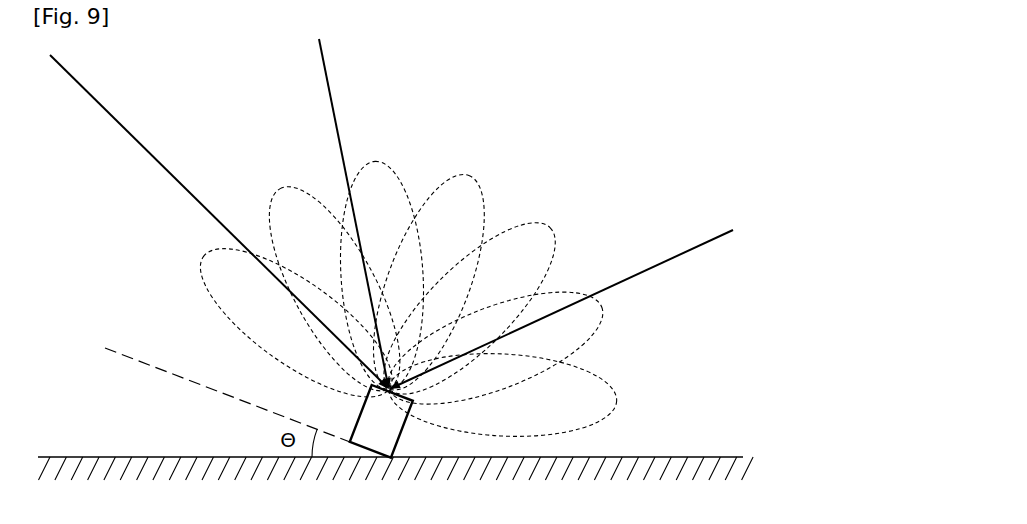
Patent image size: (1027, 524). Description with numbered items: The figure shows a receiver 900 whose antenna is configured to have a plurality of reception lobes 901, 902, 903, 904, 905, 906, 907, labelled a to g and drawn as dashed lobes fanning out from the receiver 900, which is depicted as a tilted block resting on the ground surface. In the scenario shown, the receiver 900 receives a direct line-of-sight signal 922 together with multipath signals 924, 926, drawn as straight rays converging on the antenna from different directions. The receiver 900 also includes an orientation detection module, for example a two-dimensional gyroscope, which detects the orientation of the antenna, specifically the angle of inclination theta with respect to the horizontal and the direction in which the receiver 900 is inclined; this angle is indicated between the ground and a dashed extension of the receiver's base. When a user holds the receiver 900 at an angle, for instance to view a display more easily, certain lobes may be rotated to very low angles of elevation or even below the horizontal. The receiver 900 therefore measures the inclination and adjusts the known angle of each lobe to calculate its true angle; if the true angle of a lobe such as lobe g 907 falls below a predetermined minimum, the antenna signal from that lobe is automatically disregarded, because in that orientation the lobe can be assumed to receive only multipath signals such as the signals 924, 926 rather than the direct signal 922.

The receiver 900 is at (361, 411).
The reception lobe a 901 is at (207, 259).
The reception lobe b 902 is at (275, 195).
The reception lobe c 903 is at (377, 163).
The reception lobe d 904 is at (466, 176).
The reception lobe e 905 is at (557, 229).
The reception lobe f 906 is at (607, 309).
The reception lobe g 907 is at (617, 407).
The direct line-of-sight signal 922 is at (325, 68).
The multipath signal 924 is at (80, 84).
The multipath signal 926 is at (719, 235).